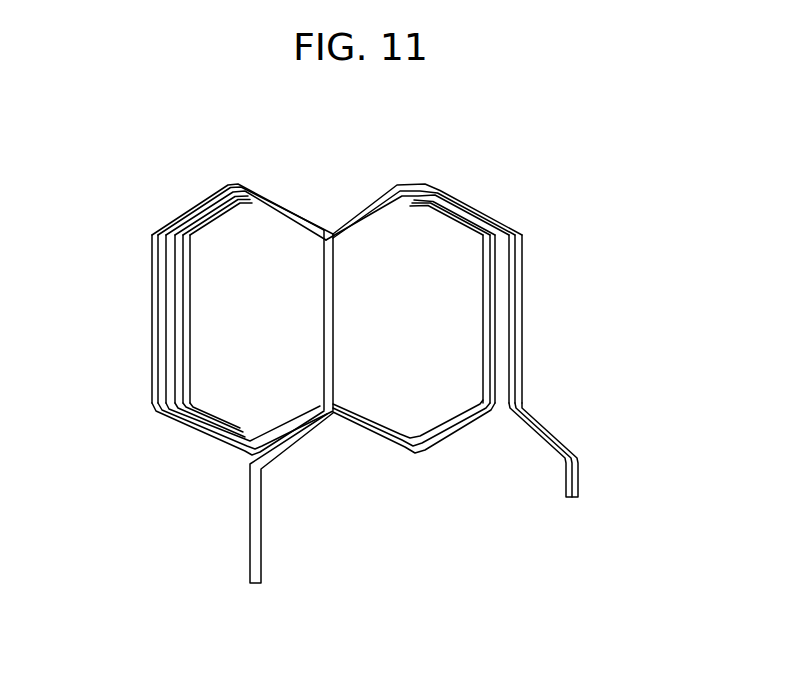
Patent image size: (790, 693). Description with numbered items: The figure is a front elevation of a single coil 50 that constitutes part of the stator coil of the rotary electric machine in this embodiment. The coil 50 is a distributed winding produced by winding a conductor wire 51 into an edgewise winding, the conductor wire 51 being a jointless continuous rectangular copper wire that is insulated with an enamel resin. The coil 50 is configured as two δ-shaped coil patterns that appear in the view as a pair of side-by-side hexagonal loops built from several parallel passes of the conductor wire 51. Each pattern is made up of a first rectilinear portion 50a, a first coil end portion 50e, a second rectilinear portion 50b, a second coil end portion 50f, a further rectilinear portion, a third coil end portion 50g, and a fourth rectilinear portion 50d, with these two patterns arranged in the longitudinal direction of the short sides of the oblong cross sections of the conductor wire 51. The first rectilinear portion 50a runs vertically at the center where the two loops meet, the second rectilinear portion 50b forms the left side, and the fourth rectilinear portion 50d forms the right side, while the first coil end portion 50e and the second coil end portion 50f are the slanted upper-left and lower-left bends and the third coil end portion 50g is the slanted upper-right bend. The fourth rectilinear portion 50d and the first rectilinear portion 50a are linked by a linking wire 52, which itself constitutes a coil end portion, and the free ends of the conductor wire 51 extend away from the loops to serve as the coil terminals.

The coil 50 is at (103, 152).
The first rectilinear portion 50a is at (330, 358).
The second rectilinear portion 50b is at (178, 337).
The fourth rectilinear portion 50d is at (492, 353).
The first coil end portion 50e is at (218, 204).
The second coil end portion 50f is at (218, 428).
The third coil end portion 50g is at (460, 208).
The conductor wire 51 is at (248, 500).
The linking wire 52 is at (383, 437).